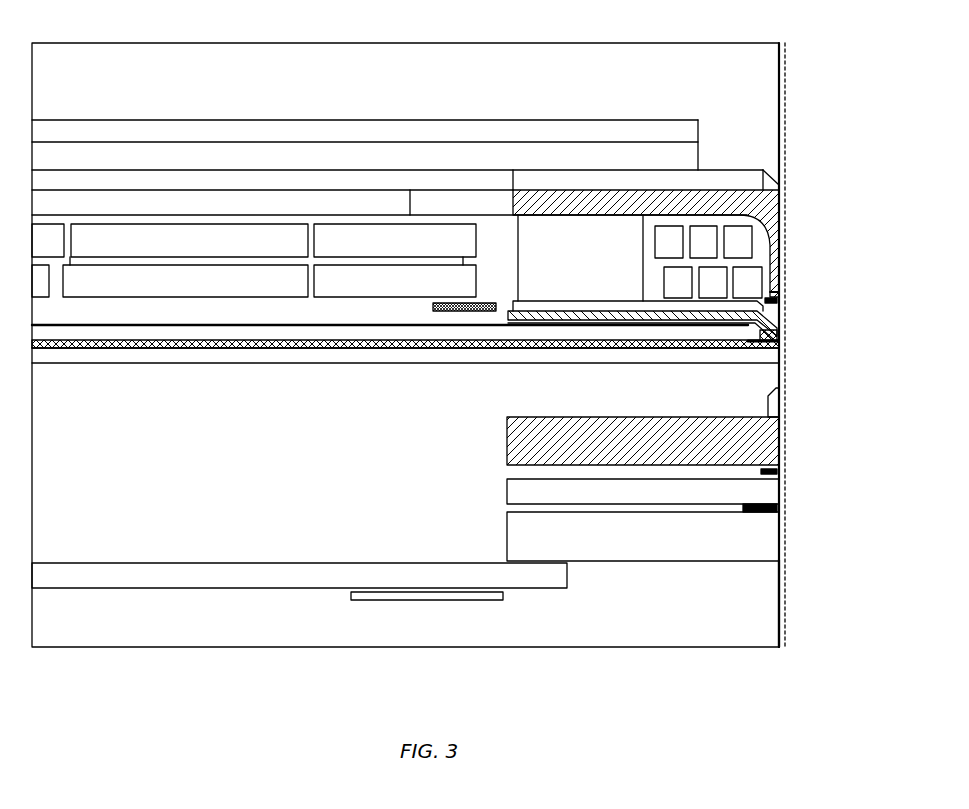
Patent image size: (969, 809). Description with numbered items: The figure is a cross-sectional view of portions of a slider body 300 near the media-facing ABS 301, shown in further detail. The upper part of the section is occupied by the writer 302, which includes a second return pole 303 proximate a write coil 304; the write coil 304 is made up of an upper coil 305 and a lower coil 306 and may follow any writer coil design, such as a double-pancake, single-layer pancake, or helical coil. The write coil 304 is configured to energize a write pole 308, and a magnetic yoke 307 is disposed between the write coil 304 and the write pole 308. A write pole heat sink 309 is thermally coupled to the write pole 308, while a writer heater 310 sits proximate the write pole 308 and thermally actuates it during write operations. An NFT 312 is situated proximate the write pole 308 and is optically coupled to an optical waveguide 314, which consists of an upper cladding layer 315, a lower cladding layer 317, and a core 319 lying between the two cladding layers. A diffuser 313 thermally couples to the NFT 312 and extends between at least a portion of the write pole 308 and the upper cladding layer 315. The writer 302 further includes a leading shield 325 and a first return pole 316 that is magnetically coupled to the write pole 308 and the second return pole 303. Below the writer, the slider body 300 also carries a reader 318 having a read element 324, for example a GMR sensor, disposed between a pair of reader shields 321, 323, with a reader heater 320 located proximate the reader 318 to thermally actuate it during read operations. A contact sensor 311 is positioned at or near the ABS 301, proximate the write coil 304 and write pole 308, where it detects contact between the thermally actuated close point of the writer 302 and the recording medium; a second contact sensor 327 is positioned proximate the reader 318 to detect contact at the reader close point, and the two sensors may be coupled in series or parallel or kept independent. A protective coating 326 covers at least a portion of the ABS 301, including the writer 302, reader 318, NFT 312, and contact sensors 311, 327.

The slider body 300 is at (677, 43).
The media-facing ABS 301 is at (781, 82).
The writer 302 is at (428, 219).
The second return pole 303 is at (779, 203).
The write coil 304 is at (610, 242).
The upper coil 305 is at (655, 241).
The lower coil 306 is at (664, 282).
The magnetic yoke 307 is at (578, 306).
The write pole 308 is at (783, 325).
The write pole heat sink 309 is at (800, 306).
The writer heater 310 is at (433, 307).
The contact sensor 311 is at (781, 291).
The NFT 312 is at (758, 333).
The diffuser 313 is at (569, 320).
The optical waveguide 314 is at (182, 365).
The upper cladding layer 315 is at (262, 330).
The first return pole 316 is at (780, 455).
The lower cladding layer 317 is at (258, 352).
The reader 318 is at (630, 518).
The core 319 is at (318, 350).
The reader heater 320 is at (425, 600).
The reader shield 321 is at (778, 498).
The reader shield 323 is at (779, 545).
The read element 324 is at (779, 510).
The leading shield 325 is at (773, 413).
The protective coating 326 is at (781, 598).
The contact sensor 327 is at (779, 472).